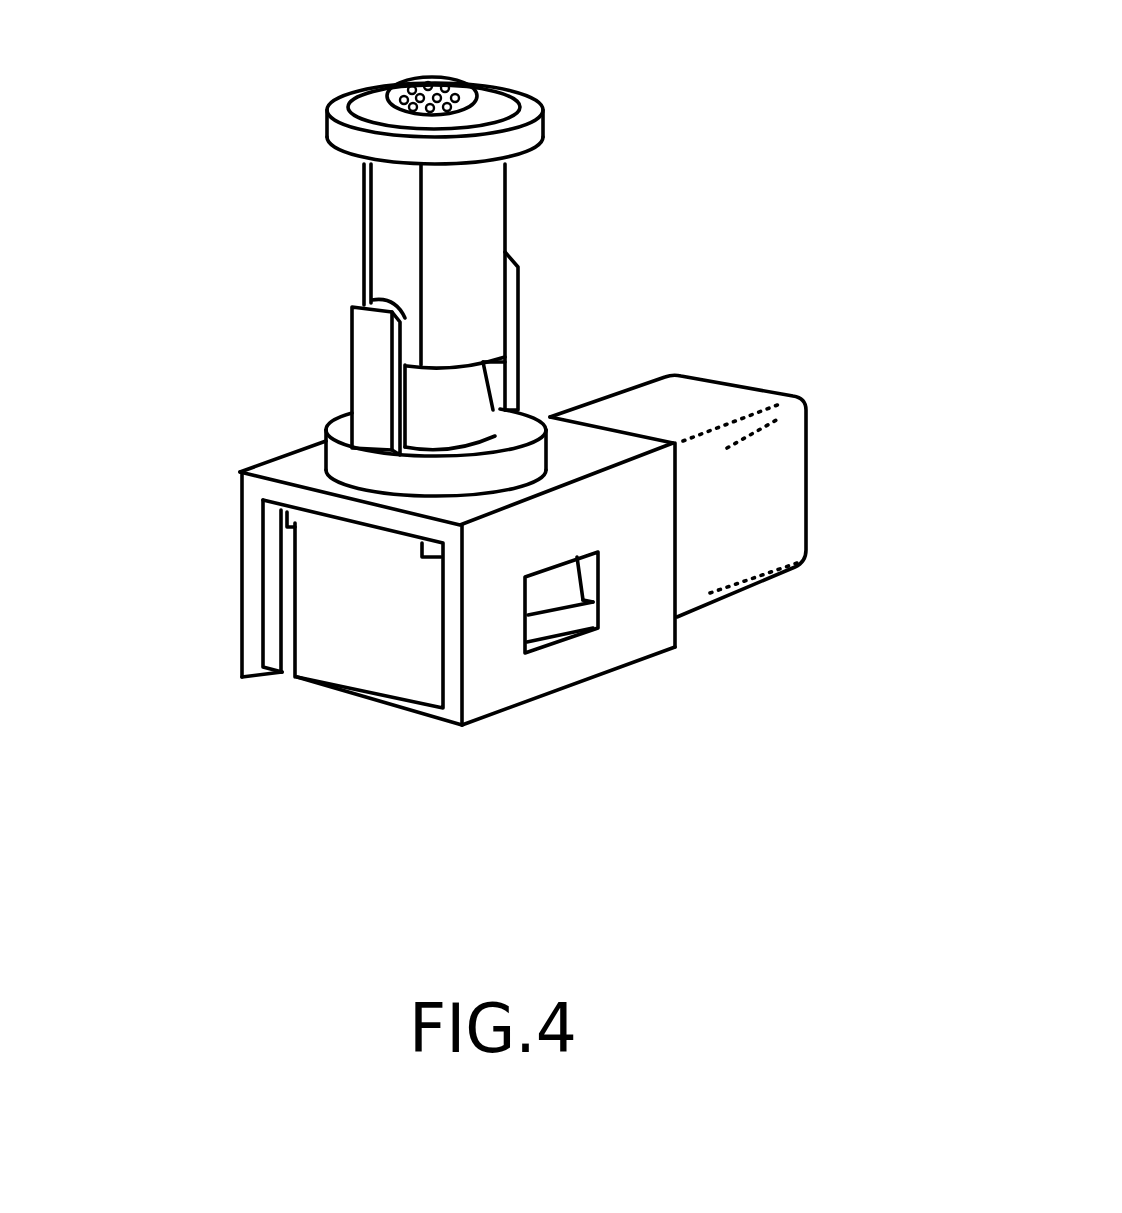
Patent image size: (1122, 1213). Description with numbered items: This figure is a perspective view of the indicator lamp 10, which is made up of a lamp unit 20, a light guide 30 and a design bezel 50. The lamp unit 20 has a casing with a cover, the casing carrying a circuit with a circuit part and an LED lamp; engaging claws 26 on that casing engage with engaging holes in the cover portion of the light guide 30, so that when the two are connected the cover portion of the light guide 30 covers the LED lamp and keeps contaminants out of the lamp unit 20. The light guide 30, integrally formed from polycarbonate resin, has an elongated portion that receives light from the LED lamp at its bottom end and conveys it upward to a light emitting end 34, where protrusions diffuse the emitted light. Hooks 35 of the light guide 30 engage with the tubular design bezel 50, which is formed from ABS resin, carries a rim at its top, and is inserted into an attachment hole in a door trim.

The indicator lamp 10 is at (283, 728).
The lamp unit 20 is at (707, 407).
The engaging claws 26 is at (548, 598).
The light guide 30 is at (530, 537).
The light emitting end 34 is at (500, 92).
The hooks 35 is at (370, 367).
The design bezel 50 is at (362, 208).